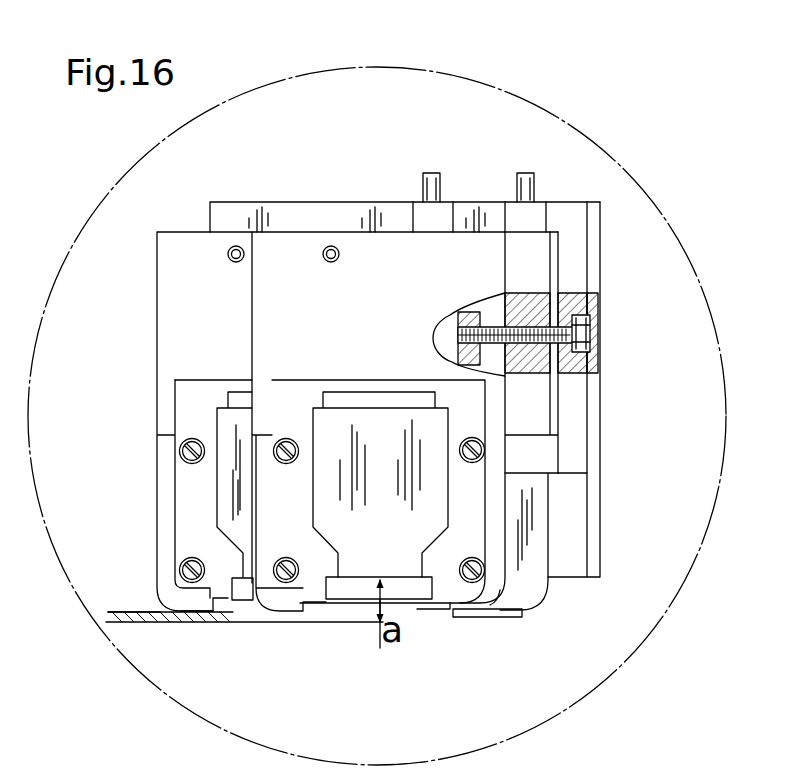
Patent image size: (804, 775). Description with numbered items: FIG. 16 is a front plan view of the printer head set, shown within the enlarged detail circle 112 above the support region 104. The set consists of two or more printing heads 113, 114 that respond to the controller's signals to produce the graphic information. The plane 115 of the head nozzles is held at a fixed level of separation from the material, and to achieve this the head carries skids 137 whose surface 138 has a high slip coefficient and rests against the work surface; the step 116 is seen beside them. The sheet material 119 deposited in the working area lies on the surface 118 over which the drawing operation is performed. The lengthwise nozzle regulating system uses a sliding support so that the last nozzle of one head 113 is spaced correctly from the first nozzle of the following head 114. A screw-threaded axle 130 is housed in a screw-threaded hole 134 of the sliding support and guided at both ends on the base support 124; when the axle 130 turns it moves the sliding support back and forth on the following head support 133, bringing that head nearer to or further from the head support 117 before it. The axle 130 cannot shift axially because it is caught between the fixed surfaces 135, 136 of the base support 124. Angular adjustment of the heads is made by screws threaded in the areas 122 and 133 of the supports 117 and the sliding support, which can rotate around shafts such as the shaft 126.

The base plate 104 is at (160, 624).
The detail circle 112 is at (377, 67).
The printing head 113 is at (227, 600).
The printing head 114 is at (323, 525).
The plane of the printer head nozzles 115 is at (343, 602).
The step 116 is at (427, 611).
The head support 117 is at (170, 317).
The surface 118 is at (115, 610).
The part of paper 119 is at (200, 617).
The area 122 is at (236, 244).
The base support 124 is at (287, 225).
The shaft 126 is at (432, 173).
The screw-threaded axle 130 is at (590, 342).
The head support 133 is at (540, 536).
The screw-threaded hole 134 is at (522, 320).
The fixed surface 135 is at (592, 386).
The fixed surface 136 is at (574, 406).
The skid 137 is at (510, 592).
The surface of the skid 138 is at (463, 619).